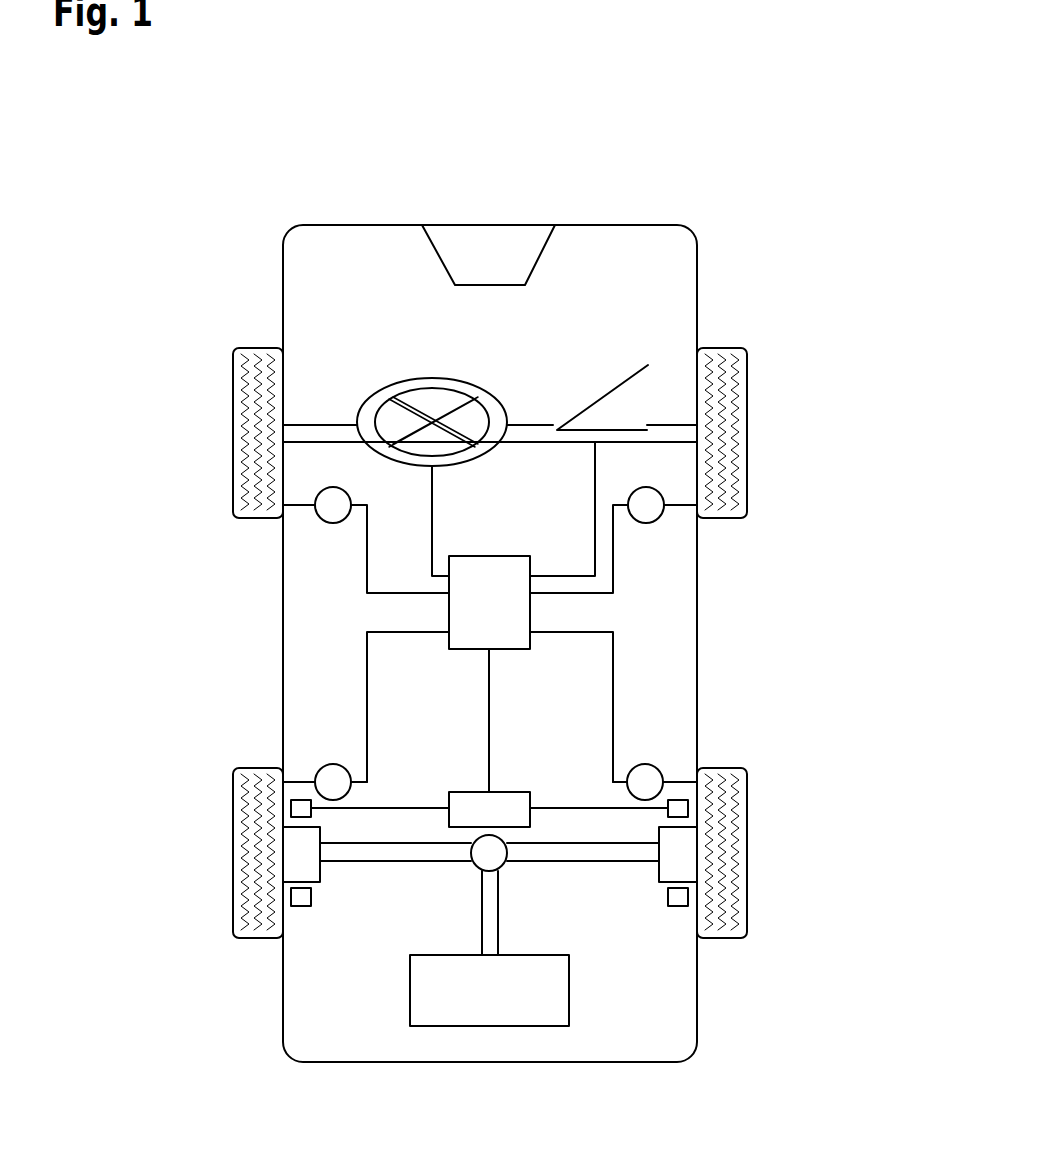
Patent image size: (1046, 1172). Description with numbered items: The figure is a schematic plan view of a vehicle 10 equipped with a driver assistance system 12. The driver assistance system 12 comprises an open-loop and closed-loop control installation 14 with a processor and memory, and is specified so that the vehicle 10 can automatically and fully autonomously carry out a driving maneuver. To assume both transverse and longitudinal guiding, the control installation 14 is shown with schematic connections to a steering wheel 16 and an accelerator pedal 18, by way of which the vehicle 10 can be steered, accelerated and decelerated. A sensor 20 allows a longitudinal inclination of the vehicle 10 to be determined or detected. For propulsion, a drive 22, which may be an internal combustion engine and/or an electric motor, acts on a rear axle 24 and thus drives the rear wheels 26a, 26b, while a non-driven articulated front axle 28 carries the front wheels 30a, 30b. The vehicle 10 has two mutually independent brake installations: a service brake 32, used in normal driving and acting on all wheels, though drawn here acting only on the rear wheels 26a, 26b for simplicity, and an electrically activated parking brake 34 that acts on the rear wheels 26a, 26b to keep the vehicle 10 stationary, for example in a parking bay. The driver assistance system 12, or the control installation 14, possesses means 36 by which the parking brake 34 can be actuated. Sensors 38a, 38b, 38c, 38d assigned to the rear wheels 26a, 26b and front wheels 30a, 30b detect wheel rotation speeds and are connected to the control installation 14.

The vehicle 10 is at (616, 225).
The driver assistance system 12 is at (663, 670).
The open-loop and closed-loop control installation 14 is at (531, 618).
The steering wheel 16 is at (436, 378).
The accelerator pedal 18 is at (630, 428).
The sensor 20 is at (428, 240).
The drive 22 is at (440, 1028).
The rear axle 24 is at (440, 863).
The rear wheel 26a is at (233, 854).
The rear wheel 26b is at (747, 849).
The front axle 28 is at (523, 424).
The front wheel 30a is at (233, 440).
The front wheel 30b is at (747, 440).
The service brake 32 is at (300, 906).
The parking brake 34 is at (300, 800).
The means 36 is at (437, 792).
The sensor 38a is at (328, 765).
The sensor 38b is at (650, 765).
The sensor 38c is at (333, 524).
The sensor 38d is at (646, 524).